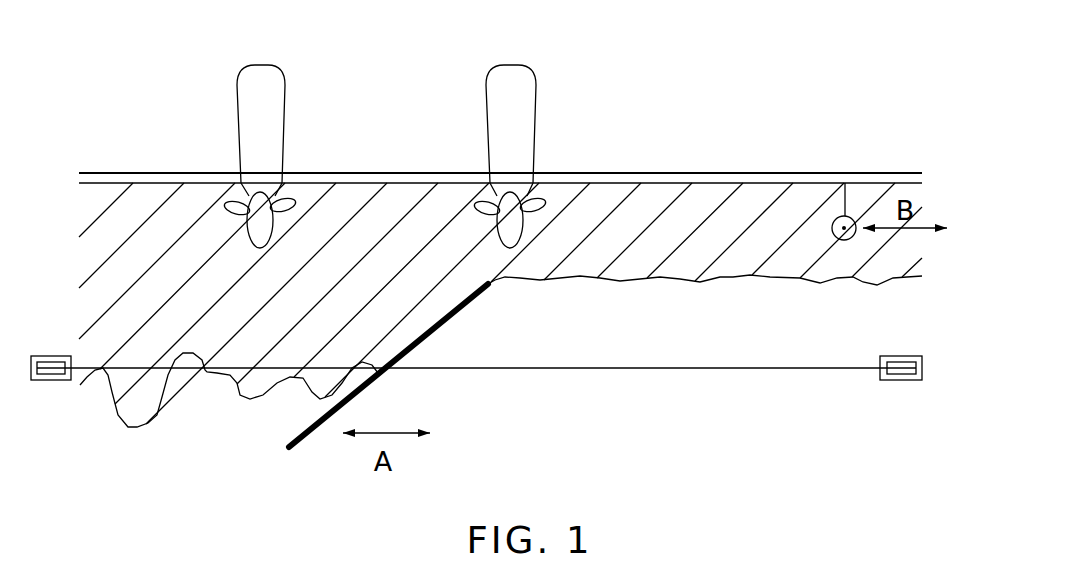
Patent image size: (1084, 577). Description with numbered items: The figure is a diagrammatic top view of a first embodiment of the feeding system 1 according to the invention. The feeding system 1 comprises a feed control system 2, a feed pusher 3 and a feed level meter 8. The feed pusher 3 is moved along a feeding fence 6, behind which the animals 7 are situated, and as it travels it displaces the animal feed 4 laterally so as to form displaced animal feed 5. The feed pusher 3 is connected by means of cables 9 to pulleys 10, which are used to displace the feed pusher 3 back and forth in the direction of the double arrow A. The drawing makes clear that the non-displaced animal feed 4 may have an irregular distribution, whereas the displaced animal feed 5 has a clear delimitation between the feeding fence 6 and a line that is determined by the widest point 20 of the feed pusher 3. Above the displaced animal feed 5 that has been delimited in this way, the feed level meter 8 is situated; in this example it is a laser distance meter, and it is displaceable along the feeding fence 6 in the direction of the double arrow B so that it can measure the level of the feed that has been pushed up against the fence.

The feeding system 1 is at (640, 94).
The feed control system 2 is at (553, 406).
The feed pusher 3 is at (362, 388).
The animal feed 4 is at (205, 290).
The displaced animal feed 5 is at (762, 245).
The feeding fence 6 is at (685, 178).
The animals 7 is at (486, 106).
The feed level meter 8 is at (852, 215).
The cables 9 is at (190, 368).
The pulleys 10 is at (51, 375).
The widest point of the feed pusher 20 is at (490, 284).